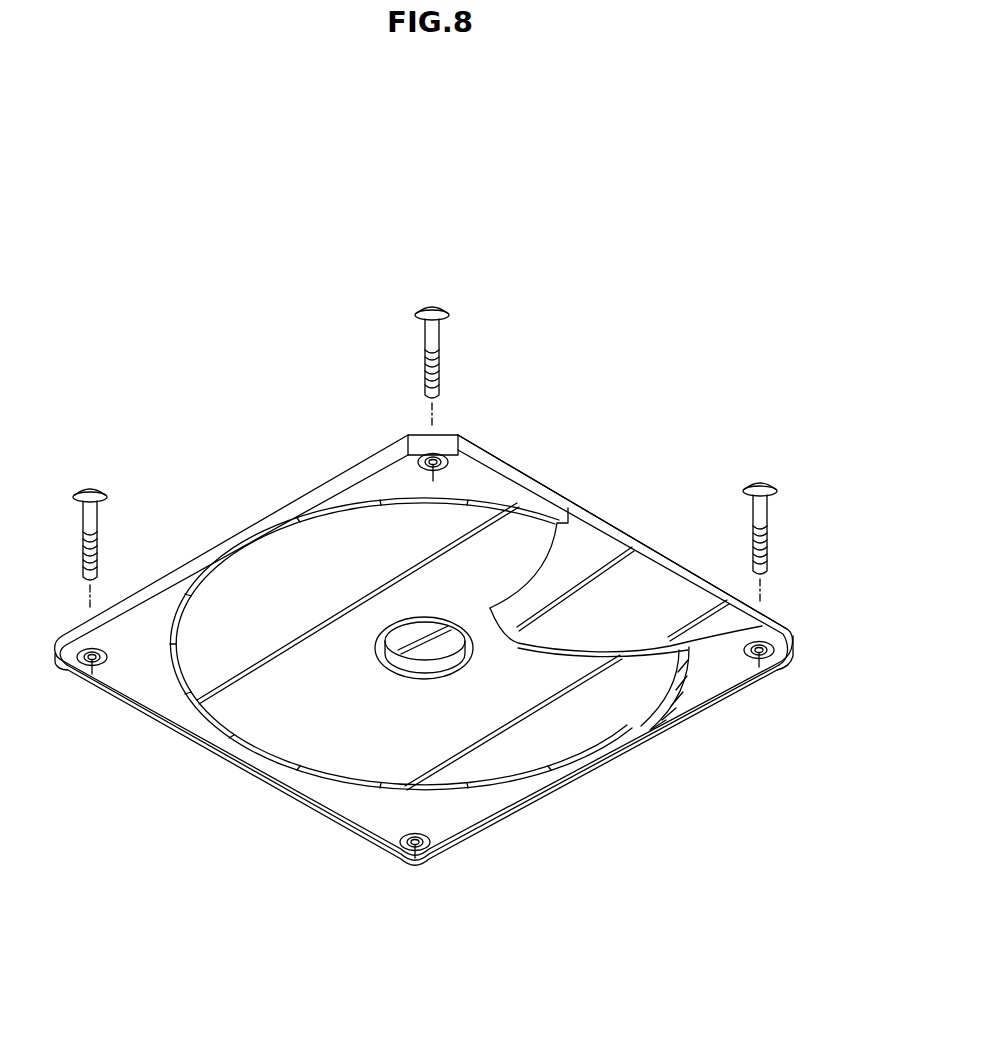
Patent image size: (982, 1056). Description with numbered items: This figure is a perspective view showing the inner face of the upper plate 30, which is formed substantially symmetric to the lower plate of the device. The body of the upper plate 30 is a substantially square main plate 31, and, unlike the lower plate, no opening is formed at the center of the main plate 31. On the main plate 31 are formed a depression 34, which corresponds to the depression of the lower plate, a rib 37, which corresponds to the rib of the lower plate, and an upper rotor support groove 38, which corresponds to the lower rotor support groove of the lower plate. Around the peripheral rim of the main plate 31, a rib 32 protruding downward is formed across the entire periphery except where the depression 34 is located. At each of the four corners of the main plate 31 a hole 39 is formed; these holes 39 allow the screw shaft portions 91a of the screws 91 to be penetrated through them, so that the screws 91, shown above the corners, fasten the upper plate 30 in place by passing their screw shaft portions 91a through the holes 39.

The upper plate 30 is at (541, 477).
The main plate 31 is at (473, 812).
The rib 32 is at (298, 792).
The depression 34 is at (654, 557).
The rib 37 is at (430, 681).
The upper rotor support groove 38 is at (178, 690).
The holes 39 is at (437, 480).
The screws 91 is at (422, 442).
The screw shaft portions 91a is at (425, 360).